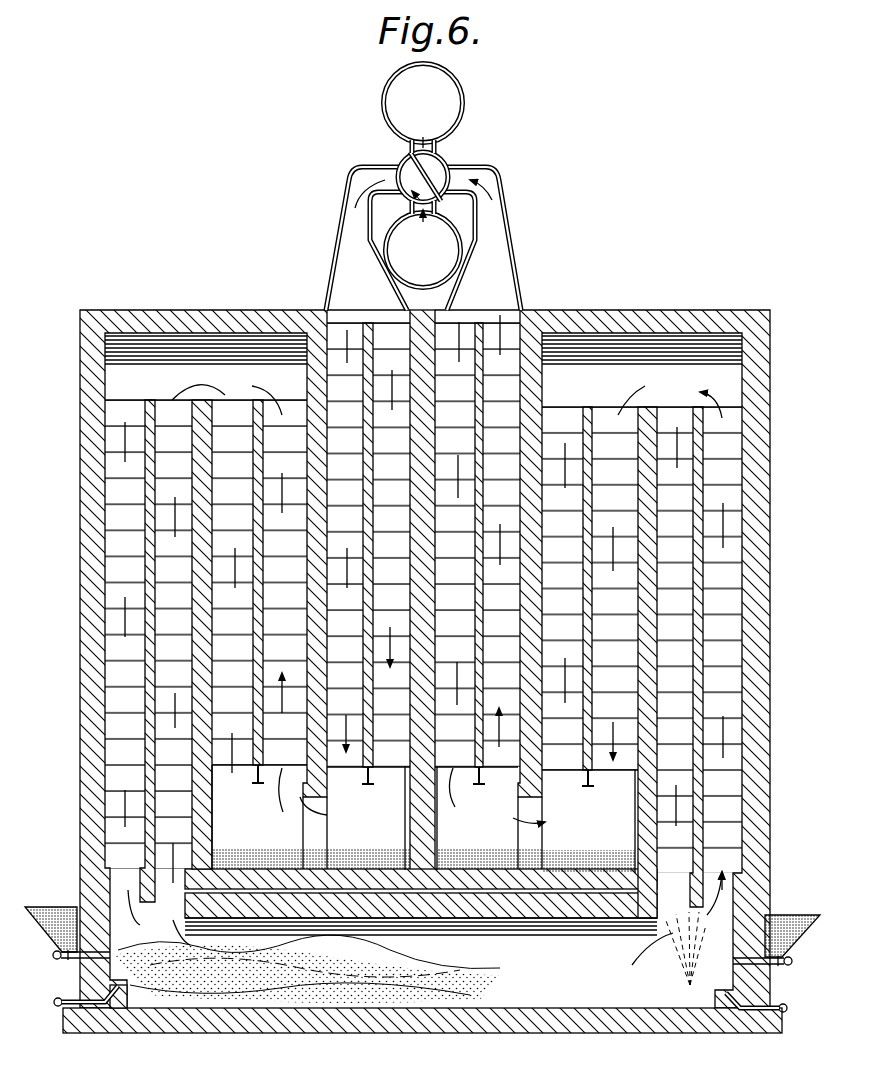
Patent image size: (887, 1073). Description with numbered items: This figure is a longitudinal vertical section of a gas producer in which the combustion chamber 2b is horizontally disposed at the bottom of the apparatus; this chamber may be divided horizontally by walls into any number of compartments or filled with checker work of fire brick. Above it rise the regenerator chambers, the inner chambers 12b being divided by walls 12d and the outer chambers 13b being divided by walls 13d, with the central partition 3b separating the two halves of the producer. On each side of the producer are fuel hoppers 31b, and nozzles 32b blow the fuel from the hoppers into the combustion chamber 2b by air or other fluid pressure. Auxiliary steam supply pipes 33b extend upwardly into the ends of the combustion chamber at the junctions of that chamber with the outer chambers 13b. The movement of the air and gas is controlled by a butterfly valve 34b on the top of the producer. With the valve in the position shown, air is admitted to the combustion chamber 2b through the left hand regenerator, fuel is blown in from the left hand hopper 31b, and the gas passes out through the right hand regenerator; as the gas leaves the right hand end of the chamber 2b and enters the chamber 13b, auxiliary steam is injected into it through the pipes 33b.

The combustion chamber 2b is at (410, 957).
The central partition wall 3b is at (428, 591).
The chamber 12b is at (488, 628).
The walls 12d is at (487, 677).
The outer chamber 13b is at (735, 782).
The walls 13d is at (697, 683).
The fuel hopper 31b is at (782, 920).
The nozzle 32b is at (790, 966).
The auxiliary steam supply pipe 33b is at (785, 1009).
The butterfly valve 34b is at (437, 185).